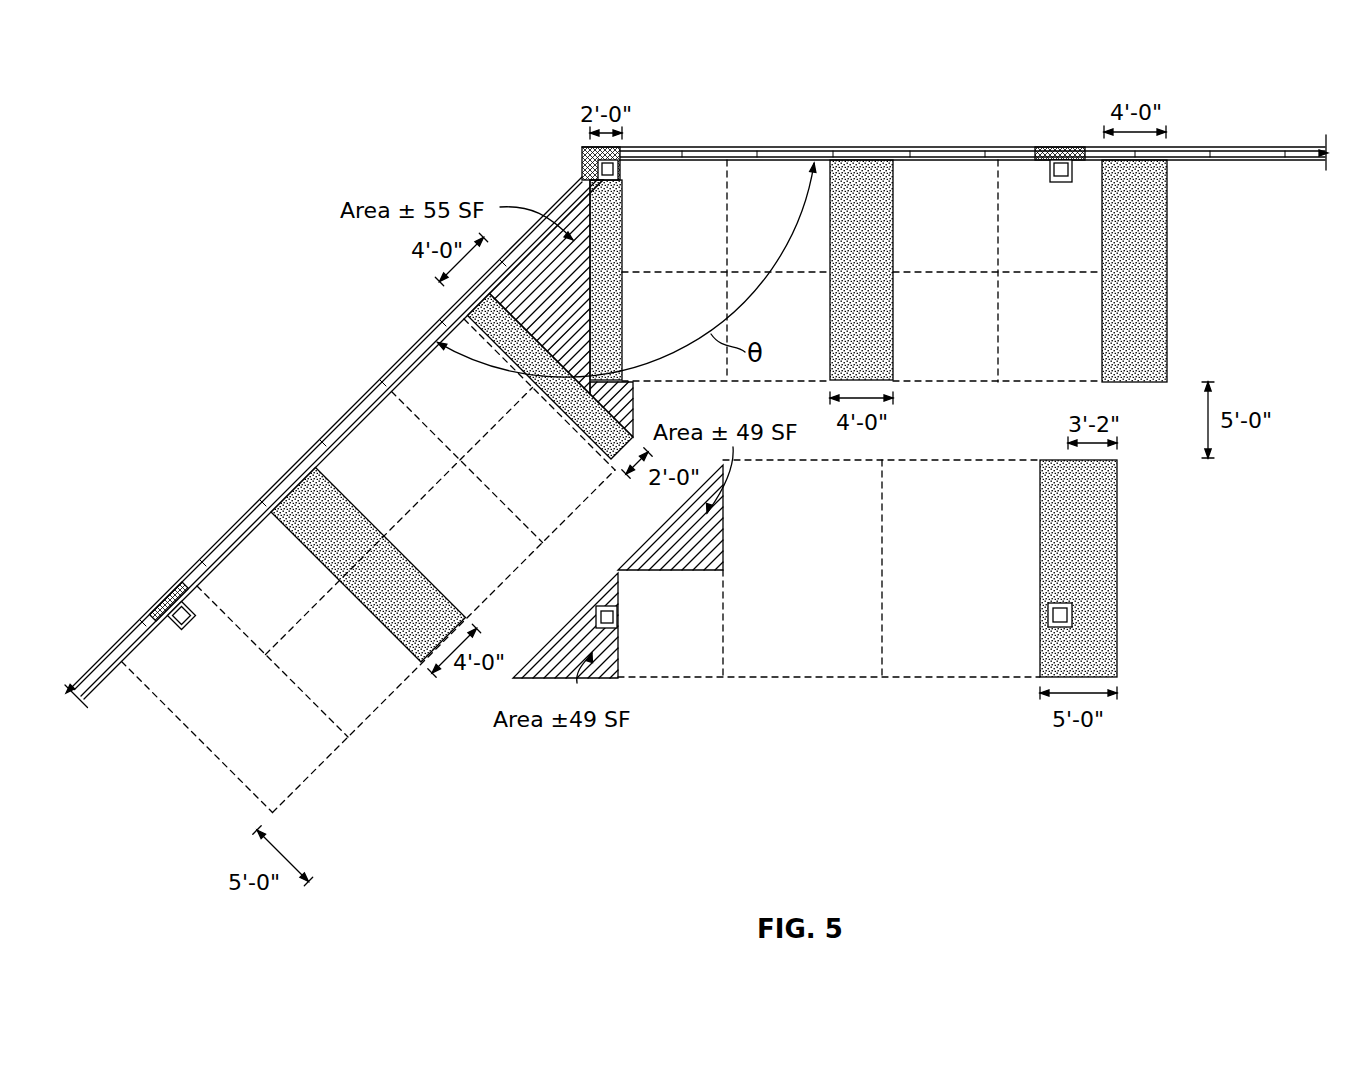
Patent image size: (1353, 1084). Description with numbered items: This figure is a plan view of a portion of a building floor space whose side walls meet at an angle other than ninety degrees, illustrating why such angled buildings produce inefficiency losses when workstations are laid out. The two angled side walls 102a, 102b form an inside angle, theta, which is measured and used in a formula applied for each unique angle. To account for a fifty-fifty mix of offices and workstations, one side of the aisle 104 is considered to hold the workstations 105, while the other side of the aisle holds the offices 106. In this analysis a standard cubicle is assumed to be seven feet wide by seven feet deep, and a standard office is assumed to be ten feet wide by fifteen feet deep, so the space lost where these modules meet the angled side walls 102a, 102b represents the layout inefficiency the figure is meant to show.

The angled side wall 102a is at (343, 407).
The angled side wall 102b is at (950, 146).
The aisle 104 is at (968, 427).
The workstations 105 is at (248, 546).
The offices 106 is at (812, 653).